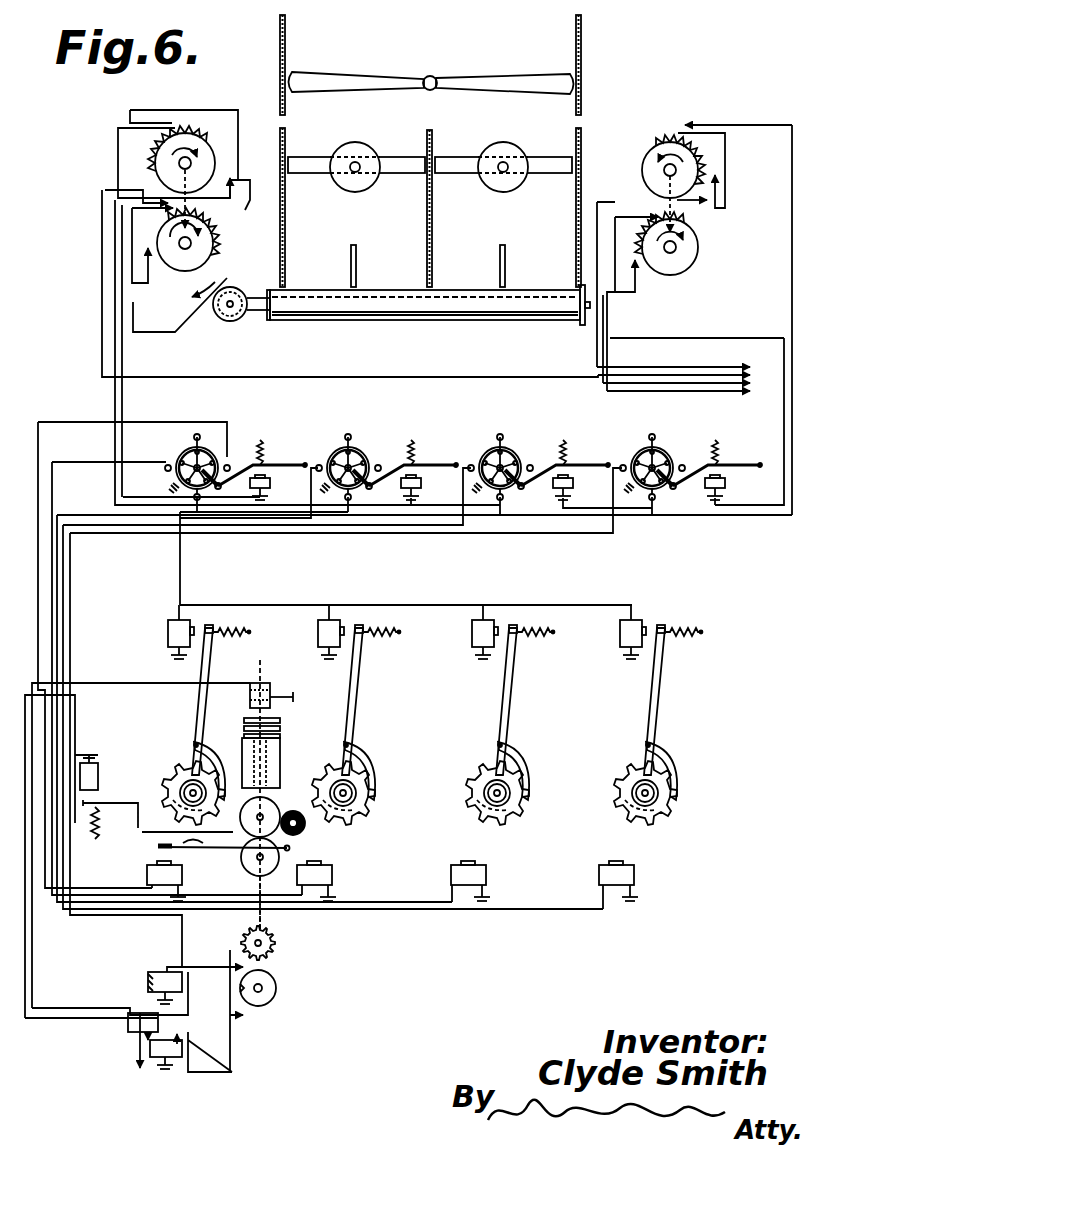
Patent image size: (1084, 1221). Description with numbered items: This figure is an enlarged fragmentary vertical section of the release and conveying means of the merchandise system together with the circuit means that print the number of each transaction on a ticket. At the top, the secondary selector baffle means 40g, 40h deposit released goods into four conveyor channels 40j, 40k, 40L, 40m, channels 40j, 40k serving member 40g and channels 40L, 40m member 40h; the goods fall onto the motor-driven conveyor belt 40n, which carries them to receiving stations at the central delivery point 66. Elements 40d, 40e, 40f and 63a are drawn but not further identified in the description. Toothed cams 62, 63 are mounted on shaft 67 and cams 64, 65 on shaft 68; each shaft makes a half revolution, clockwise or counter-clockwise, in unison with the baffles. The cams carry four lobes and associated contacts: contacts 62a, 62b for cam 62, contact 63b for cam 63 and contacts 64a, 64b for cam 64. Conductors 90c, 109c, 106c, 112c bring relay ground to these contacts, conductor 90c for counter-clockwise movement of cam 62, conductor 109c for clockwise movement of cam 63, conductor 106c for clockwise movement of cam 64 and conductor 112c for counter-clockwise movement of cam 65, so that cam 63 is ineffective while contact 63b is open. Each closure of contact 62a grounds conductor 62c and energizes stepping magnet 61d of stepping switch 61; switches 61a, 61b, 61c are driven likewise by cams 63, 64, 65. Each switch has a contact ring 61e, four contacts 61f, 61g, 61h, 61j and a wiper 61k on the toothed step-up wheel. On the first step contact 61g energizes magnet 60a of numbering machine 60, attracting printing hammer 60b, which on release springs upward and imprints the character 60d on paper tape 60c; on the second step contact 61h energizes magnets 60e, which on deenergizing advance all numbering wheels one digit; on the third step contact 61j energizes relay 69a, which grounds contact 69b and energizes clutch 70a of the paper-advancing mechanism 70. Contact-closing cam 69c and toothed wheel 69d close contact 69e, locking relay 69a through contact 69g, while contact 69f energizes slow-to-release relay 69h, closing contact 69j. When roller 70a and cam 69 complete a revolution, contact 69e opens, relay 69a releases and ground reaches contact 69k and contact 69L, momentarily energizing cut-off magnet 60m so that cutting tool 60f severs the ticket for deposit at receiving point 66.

The propeller fan 40d is at (433, 78).
The left cylindrical roller 40e is at (428, 138).
The right cylindrical roller 40f is at (573, 138).
The secondary selector baffle means 40g is at (405, 170).
The secondary selector baffle means 40h is at (552, 170).
The conveyor channel 40j is at (350, 262).
The conveyor channel 40k is at (427, 262).
The conveyor channel 40L is at (574, 260).
The conveyor channel 40m is at (500, 262).
The conveyor belt means 40n is at (242, 320).
The cam 63 is at (203, 142).
The ratchet pawl 63a is at (170, 122).
The contact 63b is at (249, 202).
The shaft 67 is at (350, 172).
The cam 62 is at (215, 250).
The contact 62a is at (105, 190).
The contact 62b is at (140, 260).
The conductor 62c is at (117, 302).
The central delivery point 66 is at (160, 325).
The shaft 68 is at (500, 172).
The cam 65 is at (716, 193).
The cam 64 is at (703, 258).
The contact 64a is at (626, 271).
The contact 64b is at (638, 292).
The conductor 112c is at (608, 390).
The conductor 109c is at (647, 389).
The conductor 106c is at (666, 390).
The conductor 90c is at (726, 376).
The stepping switch 61 is at (236, 447).
The stepping switch 61a is at (352, 436).
The stepping switch 61b is at (503, 436).
The stepping switch 61c is at (655, 436).
The stepping magnet 61d is at (274, 483).
The contact ring 61e is at (232, 460).
The contact 61f is at (204, 435).
The contact 61g is at (168, 466).
The contact 61h is at (195, 500).
The contact 61j is at (262, 455).
The wiper 61k is at (188, 446).
The numbering machine 60 is at (195, 753).
The magnet 60a is at (182, 872).
The printing hammer 60b is at (190, 848).
The paper tape 60c is at (148, 835).
The character 60d is at (178, 788).
The magnet 60e is at (168, 628).
The cutting tool 60f is at (140, 780).
The paper cut-off magnet 60m is at (91, 760).
The paper-advancing mechanism 70 is at (284, 750).
The clutch 70a is at (270, 690).
The cam 69 is at (288, 1039).
The relay 69a is at (175, 1058).
The contact 69b is at (140, 1013).
The contact-closing cam 69c is at (282, 727).
The toothed wheel 69d is at (283, 700).
The contact 69e is at (228, 1012).
The cut-off knife 69f is at (228, 958).
The contact 69g is at (239, 1059).
The slow-to-release relay 69h is at (150, 972).
The contact 69j is at (180, 962).
The contact 69k is at (132, 1032).
The contact 69L is at (190, 980).